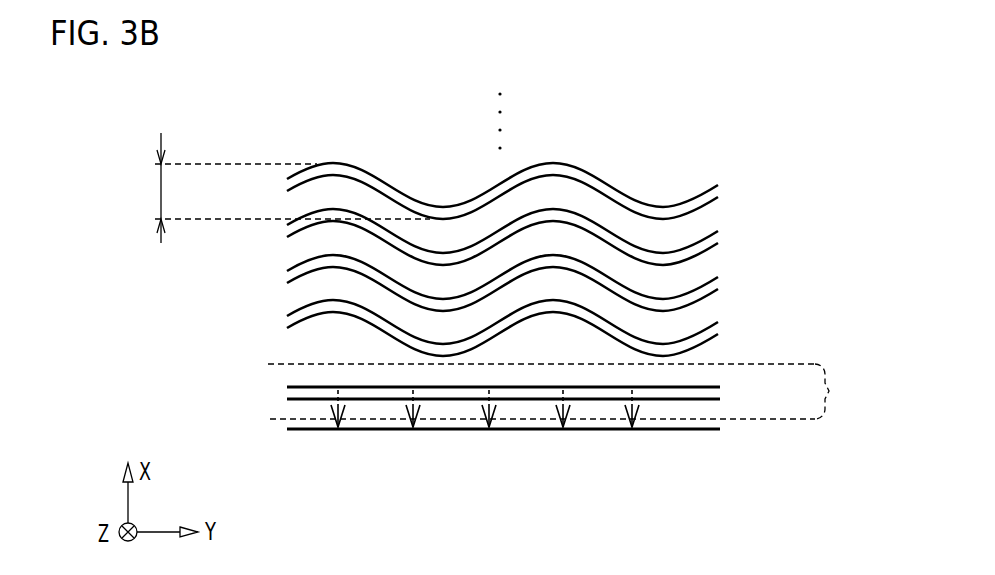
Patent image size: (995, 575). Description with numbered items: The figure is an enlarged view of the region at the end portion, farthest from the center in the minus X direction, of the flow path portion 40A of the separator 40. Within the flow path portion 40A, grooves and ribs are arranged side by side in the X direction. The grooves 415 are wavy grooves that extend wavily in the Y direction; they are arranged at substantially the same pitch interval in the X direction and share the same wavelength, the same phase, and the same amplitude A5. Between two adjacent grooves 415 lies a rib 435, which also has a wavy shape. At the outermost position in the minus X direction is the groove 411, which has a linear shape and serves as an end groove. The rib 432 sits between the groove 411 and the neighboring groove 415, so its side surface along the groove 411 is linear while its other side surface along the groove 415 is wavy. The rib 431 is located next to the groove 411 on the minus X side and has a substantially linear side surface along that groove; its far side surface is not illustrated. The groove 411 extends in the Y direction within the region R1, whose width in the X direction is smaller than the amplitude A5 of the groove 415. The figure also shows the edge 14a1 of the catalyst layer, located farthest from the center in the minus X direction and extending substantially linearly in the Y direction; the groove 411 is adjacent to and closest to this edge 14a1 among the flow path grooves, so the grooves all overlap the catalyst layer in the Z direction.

The separator 40 is at (738, 87).
The flow path portion 40A is at (771, 159).
The groove 415 is at (720, 187).
The rib 435 is at (298, 201).
The rib 432 is at (298, 354).
The rib 431 is at (300, 407).
The groove 411 is at (716, 393).
The region R1 is at (834, 391).
The edge 14a1 is at (328, 431).
The amplitude A5 is at (280, 188).